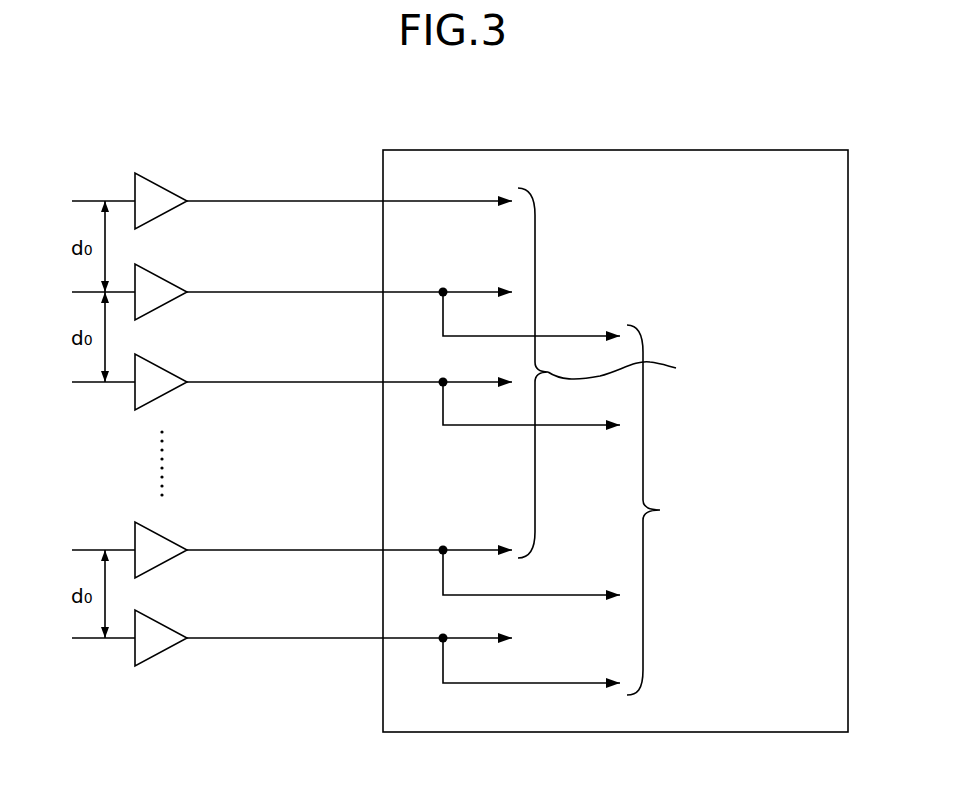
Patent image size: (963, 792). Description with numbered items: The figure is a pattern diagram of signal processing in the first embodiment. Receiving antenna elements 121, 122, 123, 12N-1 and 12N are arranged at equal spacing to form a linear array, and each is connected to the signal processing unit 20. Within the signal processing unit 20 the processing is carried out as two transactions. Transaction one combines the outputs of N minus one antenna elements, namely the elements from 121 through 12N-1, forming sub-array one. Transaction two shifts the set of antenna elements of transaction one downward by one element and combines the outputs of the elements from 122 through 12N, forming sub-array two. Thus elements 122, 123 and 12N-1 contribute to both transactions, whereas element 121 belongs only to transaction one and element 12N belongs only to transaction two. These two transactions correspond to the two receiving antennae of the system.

The antenna element 121 is at (160, 185).
The antenna element 122 is at (160, 276).
The antenna element 123 is at (160, 366).
The antenna element 12N-1 is at (160, 534).
The antenna element 12N is at (160, 622).
The signal processing unit 20 is at (667, 150).